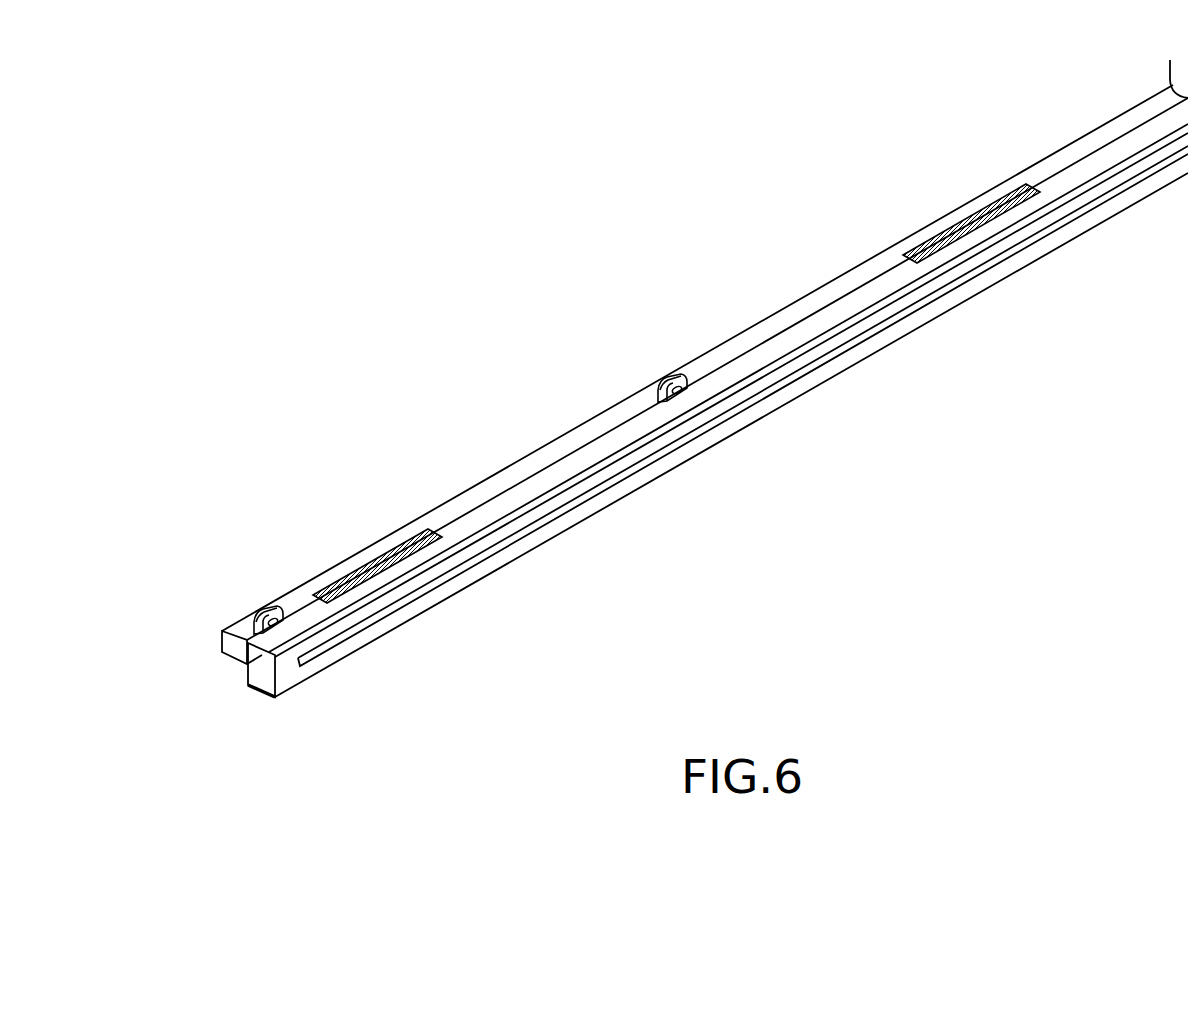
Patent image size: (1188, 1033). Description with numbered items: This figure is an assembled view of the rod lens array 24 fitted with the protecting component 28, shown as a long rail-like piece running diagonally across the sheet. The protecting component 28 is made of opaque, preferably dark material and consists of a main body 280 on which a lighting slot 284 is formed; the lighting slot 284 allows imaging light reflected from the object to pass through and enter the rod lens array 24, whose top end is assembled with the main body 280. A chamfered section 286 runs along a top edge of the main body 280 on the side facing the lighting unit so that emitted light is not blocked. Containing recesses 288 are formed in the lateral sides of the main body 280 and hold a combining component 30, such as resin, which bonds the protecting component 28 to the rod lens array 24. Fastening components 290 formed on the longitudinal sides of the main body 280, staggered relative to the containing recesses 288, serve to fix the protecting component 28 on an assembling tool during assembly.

The rod lens array 24 is at (237, 630).
The protecting component 28 is at (771, 424).
The combining component 30 is at (352, 576).
The main body 280 is at (286, 681).
The lighting slot 284 is at (532, 518).
The chamfered section 286 is at (452, 528).
The containing recess 288 is at (405, 555).
The fastening component 290 is at (681, 391).